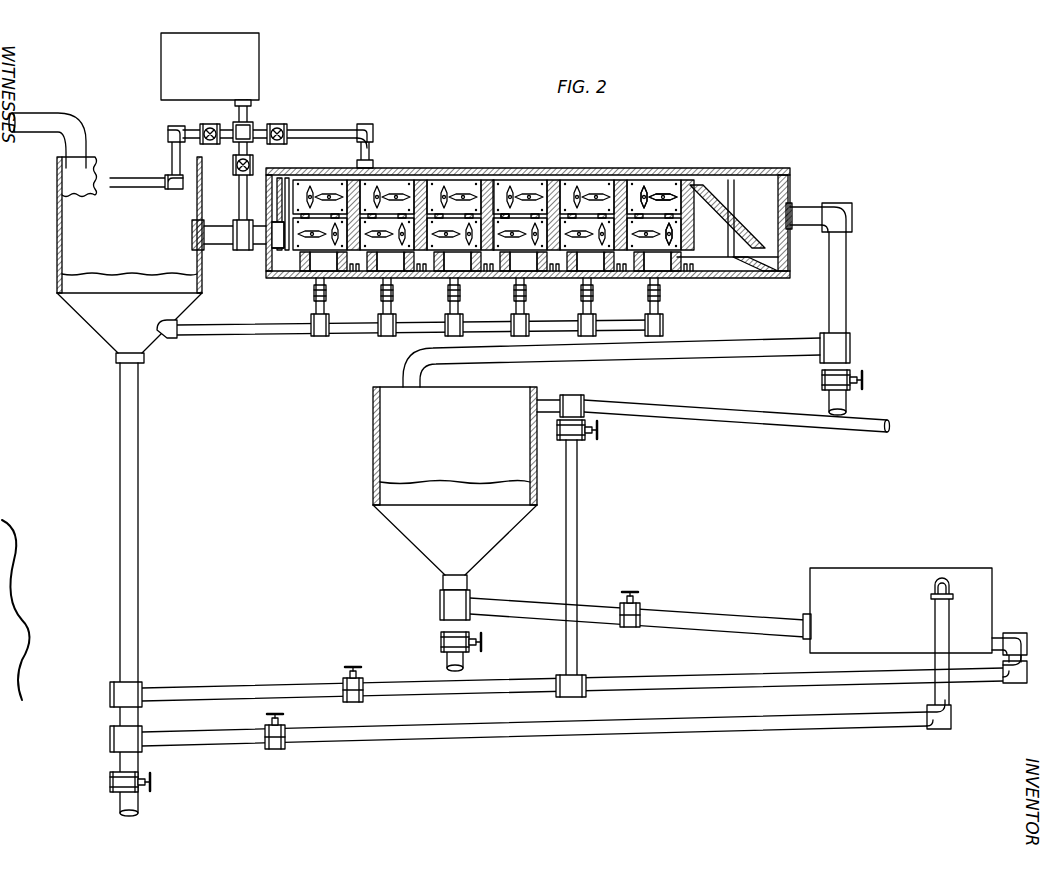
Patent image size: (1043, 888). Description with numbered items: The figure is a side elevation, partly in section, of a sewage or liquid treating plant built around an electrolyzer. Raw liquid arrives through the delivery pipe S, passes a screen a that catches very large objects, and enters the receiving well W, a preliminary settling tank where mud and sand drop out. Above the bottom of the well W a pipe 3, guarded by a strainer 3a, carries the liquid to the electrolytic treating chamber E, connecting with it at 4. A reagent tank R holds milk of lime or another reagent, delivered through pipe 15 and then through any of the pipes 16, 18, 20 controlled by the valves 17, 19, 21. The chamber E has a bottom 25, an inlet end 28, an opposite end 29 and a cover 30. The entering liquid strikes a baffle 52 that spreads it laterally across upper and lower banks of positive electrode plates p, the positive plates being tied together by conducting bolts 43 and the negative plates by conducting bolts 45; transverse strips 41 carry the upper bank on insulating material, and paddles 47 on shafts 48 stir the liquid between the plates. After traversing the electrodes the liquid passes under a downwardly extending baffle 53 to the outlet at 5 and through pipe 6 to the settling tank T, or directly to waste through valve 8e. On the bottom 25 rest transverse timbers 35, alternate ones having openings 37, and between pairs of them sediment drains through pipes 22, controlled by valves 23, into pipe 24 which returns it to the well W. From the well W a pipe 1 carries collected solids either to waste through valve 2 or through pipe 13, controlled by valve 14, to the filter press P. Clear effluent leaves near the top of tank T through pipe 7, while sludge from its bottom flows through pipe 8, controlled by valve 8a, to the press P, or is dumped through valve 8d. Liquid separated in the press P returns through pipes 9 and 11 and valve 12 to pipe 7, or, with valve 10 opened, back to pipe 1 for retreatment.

The delivery pipe S is at (72, 127).
The screen a is at (65, 194).
The receiving tank or well W is at (56, 243).
The pipe 16 is at (133, 177).
The valve 17 is at (208, 125).
The pipe 15 is at (250, 118).
The valve 21 is at (281, 130).
The pipe 20 is at (354, 130).
The valve 19 is at (235, 162).
The pipe 18 is at (240, 194).
The end 28 is at (272, 188).
The baffle 52 is at (290, 182).
The conducting bolts 43 is at (322, 182).
The positive electrode plates p is at (382, 182).
The transverse timbers or strips 41 is at (518, 215).
The electrolytic treating chamber E is at (543, 173).
The conducting bolts 45 is at (588, 212).
The top or cover 30 is at (607, 173).
The paddles 47 is at (665, 197).
The shafts 48 is at (668, 198).
The baffle 53 is at (713, 193).
The outlet 5 is at (796, 204).
The end 29 is at (790, 246).
The pipe 6 is at (847, 257).
The bottom 25 is at (708, 282).
The valve 8e is at (849, 371).
The strainer 3a is at (192, 234).
The pipe 3 is at (223, 246).
The connection 4 is at (262, 248).
The valves 23 is at (314, 293).
The pipes 22 is at (316, 312).
The openings 37 is at (372, 274).
The timbers or members 35 is at (534, 262).
The pipe 24 is at (267, 333).
The pipe 7 is at (548, 402).
The valve 12 is at (582, 440).
The pipe 11 is at (578, 522).
The settling chamber or tank T is at (373, 437).
The pipe 1 is at (134, 557).
The valve 8a is at (639, 603).
The pipe 8 is at (716, 618).
The valve 8d is at (473, 648).
The pipe 9 is at (216, 691).
The valve 10 is at (343, 676).
The pipe 13 is at (218, 738).
The valve 14 is at (284, 731).
The valve 2 is at (139, 790).
The filter press or drying apparatus P is at (901, 610).
The reagent tank R is at (210, 66).